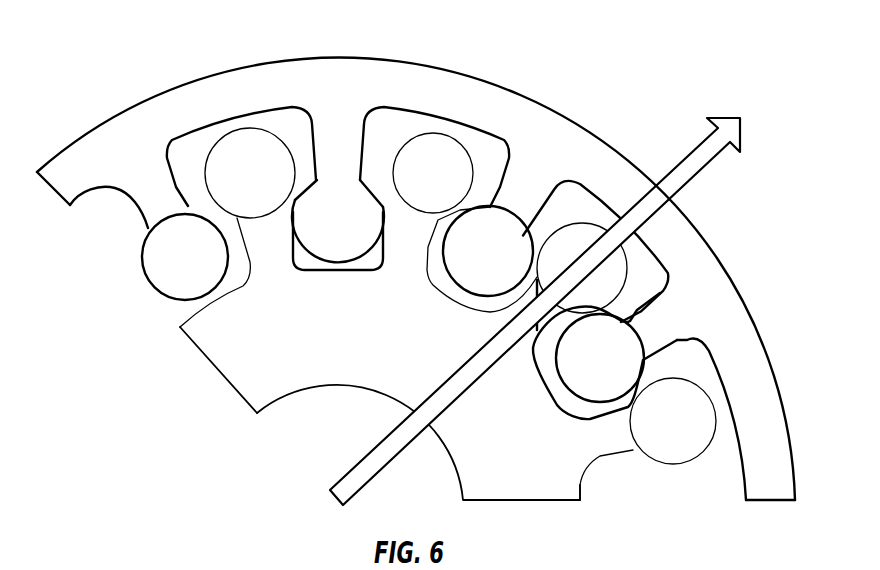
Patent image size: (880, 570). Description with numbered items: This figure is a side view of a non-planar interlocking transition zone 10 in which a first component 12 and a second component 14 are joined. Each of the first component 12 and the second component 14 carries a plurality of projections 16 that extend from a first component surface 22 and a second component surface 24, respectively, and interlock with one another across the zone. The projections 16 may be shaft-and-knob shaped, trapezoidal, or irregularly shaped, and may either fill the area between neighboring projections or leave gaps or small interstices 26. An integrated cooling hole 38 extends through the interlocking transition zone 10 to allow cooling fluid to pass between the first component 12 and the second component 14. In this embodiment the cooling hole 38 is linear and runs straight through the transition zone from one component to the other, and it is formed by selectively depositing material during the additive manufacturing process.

The interlocking transition zone 10 is at (416, 276).
The first component 12 is at (232, 350).
The second component 14 is at (168, 113).
The projections 16 is at (180, 253).
The first component surface 22 is at (580, 488).
The second component surface 24 is at (740, 485).
The interstices 26 is at (493, 158).
The cooling hole 38 is at (640, 208).